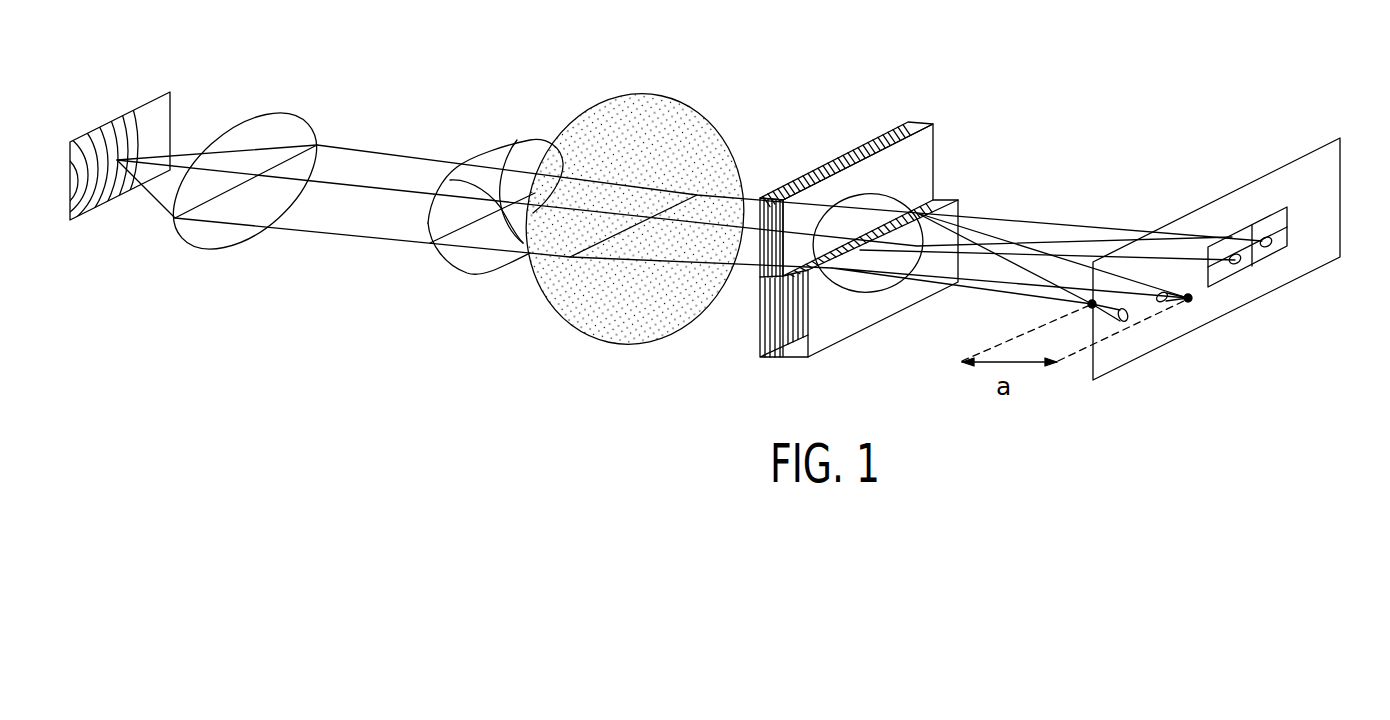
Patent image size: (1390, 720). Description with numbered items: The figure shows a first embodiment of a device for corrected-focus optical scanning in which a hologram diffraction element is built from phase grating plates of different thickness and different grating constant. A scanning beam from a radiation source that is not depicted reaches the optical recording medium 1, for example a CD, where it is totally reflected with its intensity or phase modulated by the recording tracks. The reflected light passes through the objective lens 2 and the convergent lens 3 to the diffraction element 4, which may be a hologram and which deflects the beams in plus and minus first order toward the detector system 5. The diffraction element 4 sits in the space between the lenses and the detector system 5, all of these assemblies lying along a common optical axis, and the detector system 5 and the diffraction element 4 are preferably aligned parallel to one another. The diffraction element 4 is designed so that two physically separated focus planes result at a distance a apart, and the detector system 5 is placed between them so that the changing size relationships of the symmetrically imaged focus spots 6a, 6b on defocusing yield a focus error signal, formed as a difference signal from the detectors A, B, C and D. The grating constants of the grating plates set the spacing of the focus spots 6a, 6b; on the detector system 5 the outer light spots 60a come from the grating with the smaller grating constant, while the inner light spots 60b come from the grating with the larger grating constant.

The optical recording medium 1 is at (143, 115).
The objective lens 2 is at (243, 127).
The convergent lens 3 is at (670, 102).
The diffraction element 4 is at (913, 123).
The detector system 5 is at (1305, 178).
The focus spot 6a is at (1088, 304).
The focus spot 6b is at (1190, 299).
The outer light spot 60a is at (1268, 242).
The inner light spot 60b is at (1237, 260).